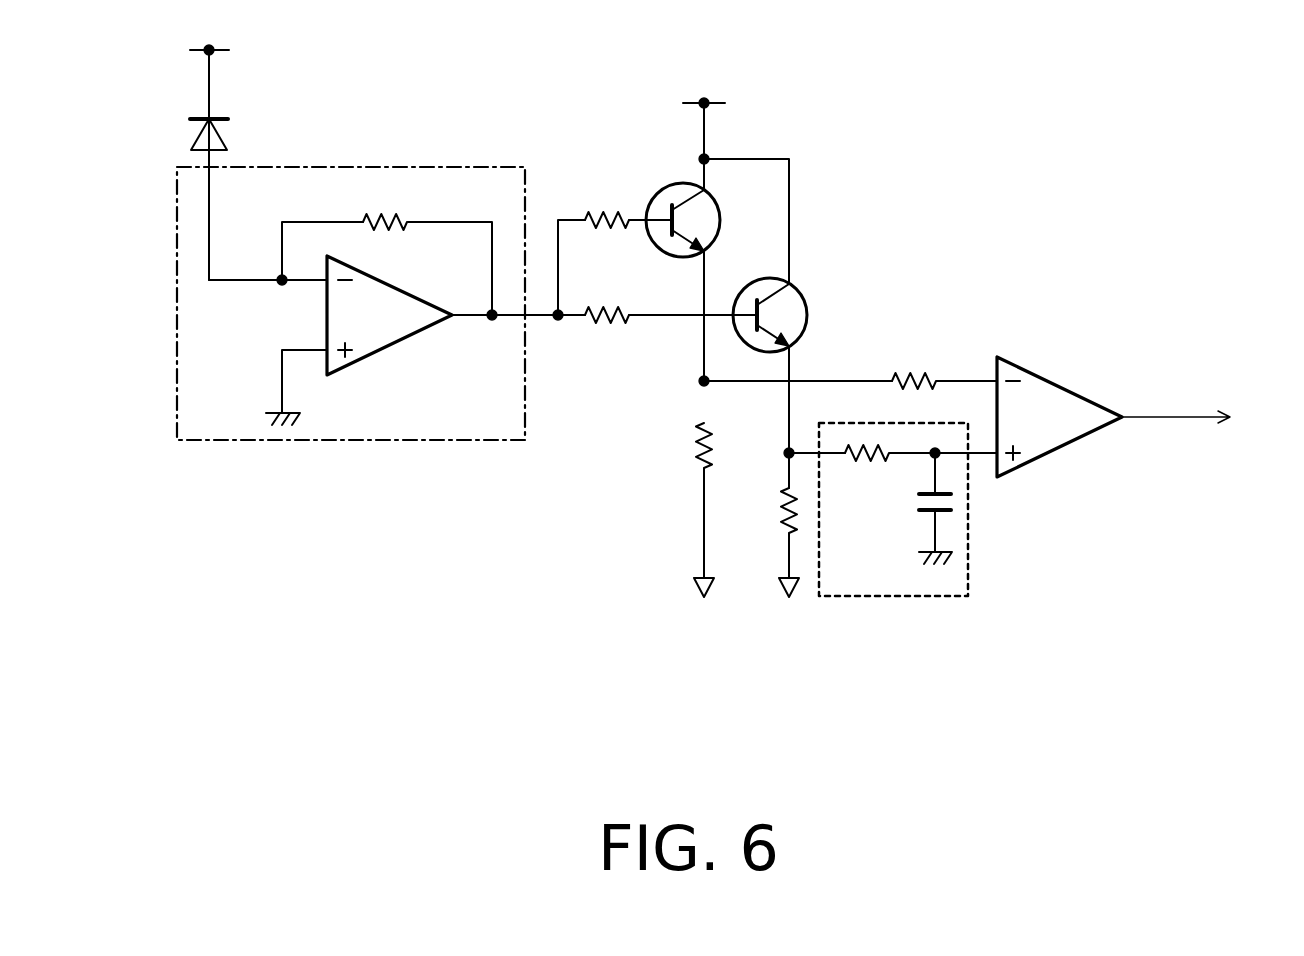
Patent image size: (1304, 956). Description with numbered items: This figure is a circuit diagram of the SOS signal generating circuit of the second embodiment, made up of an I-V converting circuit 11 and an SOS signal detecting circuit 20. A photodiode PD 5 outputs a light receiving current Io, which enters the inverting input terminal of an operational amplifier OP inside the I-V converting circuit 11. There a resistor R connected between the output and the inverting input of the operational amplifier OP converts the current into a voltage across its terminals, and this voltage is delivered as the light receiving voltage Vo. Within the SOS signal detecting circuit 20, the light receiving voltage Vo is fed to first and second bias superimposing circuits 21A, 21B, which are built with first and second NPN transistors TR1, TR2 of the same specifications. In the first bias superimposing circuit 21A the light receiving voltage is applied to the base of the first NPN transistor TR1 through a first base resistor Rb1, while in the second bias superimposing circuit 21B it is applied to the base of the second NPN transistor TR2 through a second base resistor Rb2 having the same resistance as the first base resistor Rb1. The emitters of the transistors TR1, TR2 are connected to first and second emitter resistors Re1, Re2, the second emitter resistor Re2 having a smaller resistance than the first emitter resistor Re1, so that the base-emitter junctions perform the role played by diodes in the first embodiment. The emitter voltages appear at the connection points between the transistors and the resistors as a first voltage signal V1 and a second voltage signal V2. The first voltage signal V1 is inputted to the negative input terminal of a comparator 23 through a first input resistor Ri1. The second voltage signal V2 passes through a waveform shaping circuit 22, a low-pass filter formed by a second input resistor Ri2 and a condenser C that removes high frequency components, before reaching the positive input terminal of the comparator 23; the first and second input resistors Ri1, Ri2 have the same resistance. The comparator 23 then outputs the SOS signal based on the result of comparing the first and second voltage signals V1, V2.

The PD 5 is at (190, 132).
The I-V converting circuit 11 is at (177, 373).
The SOS signal detecting circuit 20 is at (791, 128).
The first bias superimposing circuit 21A is at (642, 486).
The second bias superimposing circuit 21B is at (735, 560).
The waveform shaping circuit 22 is at (865, 598).
The comparator 23 is at (1142, 403).
The light receiving current Io is at (211, 215).
The resistor R is at (400, 198).
The operational amplifier OP is at (392, 349).
The light receiving voltage Vo is at (496, 319).
The first base resistor Rb1 is at (628, 180).
The second base resistor Rb2 is at (601, 328).
The first NPN transistor TR1 is at (758, 200).
The second NPN transistor TR2 is at (843, 292).
The first emitter resistor Re1 is at (692, 442).
The second emitter resistor Re2 is at (757, 542).
The first voltage signal V1 is at (858, 381).
The second voltage signal V2 is at (795, 453).
The first input resistor Ri1 is at (917, 362).
The second input resistor Ri2 is at (865, 466).
The condenser C is at (915, 500).
The SOS signal SOS is at (1205, 418).